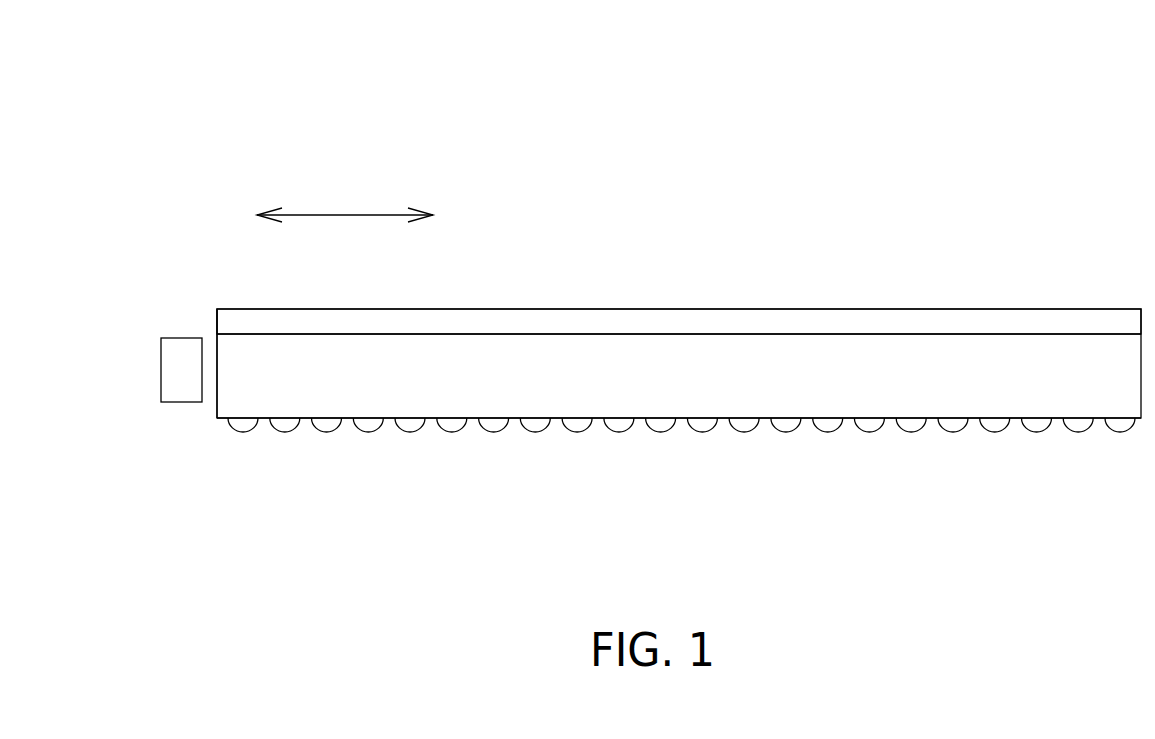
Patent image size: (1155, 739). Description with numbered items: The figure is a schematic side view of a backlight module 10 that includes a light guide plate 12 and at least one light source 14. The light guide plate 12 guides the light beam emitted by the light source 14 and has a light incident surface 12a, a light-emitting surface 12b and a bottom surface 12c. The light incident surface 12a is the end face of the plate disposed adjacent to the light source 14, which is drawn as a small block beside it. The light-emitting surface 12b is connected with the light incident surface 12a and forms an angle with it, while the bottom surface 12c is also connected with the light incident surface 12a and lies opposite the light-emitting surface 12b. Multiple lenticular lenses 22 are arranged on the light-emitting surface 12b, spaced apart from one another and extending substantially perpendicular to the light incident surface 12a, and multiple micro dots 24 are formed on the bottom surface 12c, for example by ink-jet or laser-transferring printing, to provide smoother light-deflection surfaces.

The backlight module 10 is at (240, 95).
The light guide plate 12 is at (1030, 322).
The light incident surface 12a is at (217, 378).
The light-emitting surface 12b is at (543, 334).
The bottom surface 12c is at (473, 419).
The light source 14 is at (182, 402).
The lenticular lenses 22 is at (688, 320).
The micro dots 24 is at (656, 419).